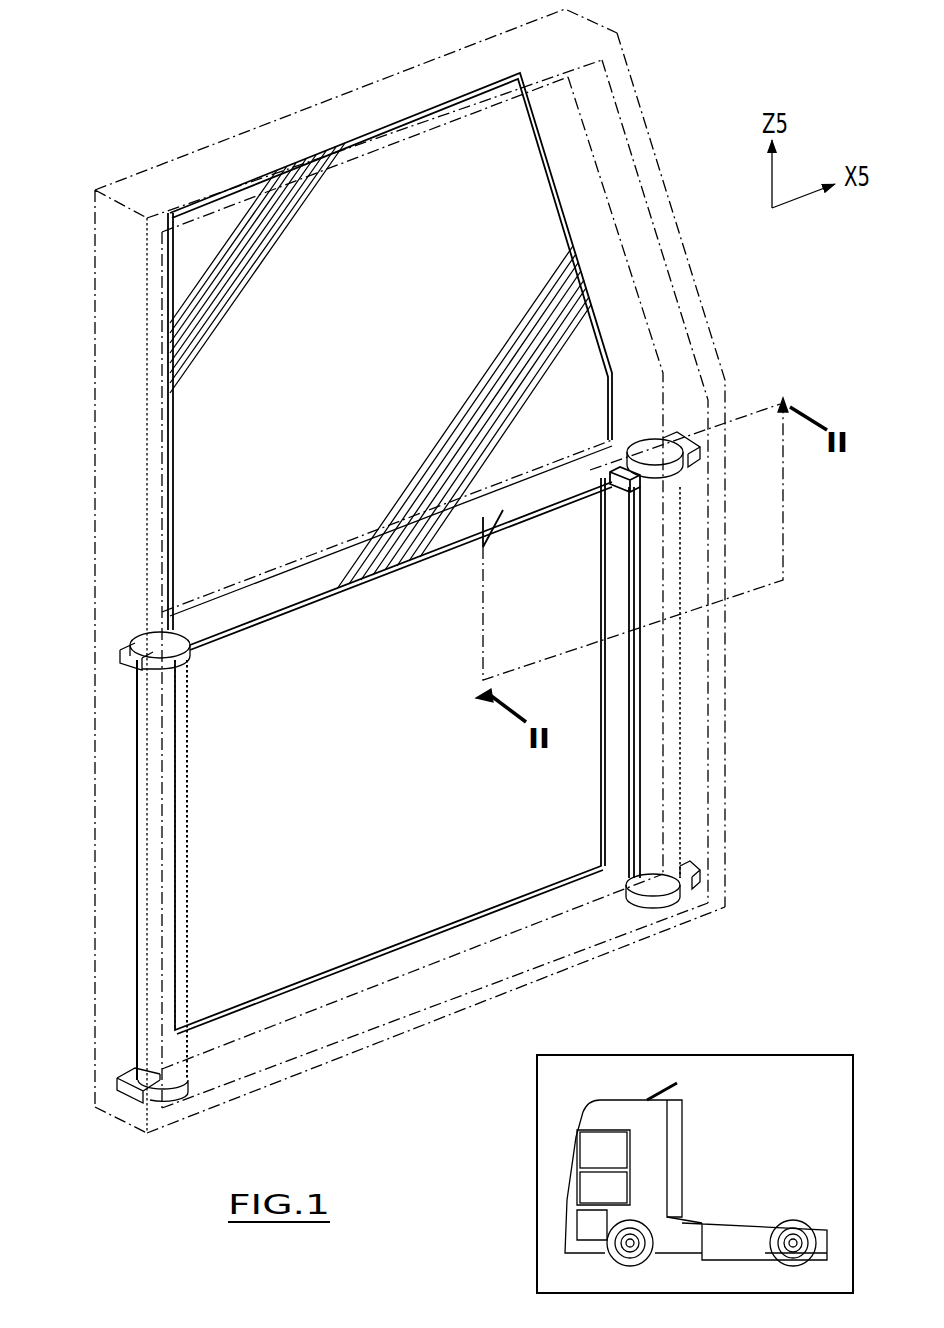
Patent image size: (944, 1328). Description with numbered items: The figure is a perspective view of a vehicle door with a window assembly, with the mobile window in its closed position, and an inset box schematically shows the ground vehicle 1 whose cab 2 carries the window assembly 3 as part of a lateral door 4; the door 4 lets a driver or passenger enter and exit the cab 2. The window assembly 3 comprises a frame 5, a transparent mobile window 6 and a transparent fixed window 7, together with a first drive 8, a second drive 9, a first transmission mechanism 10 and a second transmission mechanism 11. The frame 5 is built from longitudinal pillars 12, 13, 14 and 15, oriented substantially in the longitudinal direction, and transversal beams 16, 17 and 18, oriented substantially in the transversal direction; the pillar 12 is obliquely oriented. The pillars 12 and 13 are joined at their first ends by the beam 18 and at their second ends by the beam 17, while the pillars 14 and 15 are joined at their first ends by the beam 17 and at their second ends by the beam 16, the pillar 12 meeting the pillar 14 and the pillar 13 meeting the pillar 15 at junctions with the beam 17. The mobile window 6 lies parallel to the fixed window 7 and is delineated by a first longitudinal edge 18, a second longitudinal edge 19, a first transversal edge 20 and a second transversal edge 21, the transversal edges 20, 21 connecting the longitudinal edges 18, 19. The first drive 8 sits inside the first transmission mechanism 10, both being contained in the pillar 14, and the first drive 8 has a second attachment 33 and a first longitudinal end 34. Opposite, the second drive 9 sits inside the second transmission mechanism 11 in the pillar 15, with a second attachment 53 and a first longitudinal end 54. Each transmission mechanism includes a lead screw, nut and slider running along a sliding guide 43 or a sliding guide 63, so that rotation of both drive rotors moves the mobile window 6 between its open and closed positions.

The ground vehicle 1 is at (693, 1133).
The cab 2 is at (653, 1177).
The window assembly 3 is at (404, 96).
The lateral door 4 is at (284, 84).
The frame 5 is at (622, 103).
The mobile window 6 is at (603, 1140).
The fixed window 7 is at (590, 1198).
The first drive 8 is at (676, 647).
The second drive 9 is at (157, 803).
The first transmission mechanism 10 is at (647, 733).
The second transmission mechanism 11 is at (157, 877).
The longitudinal pillar 12 is at (663, 320).
The longitudinal pillar 13 is at (122, 428).
The longitudinal pillar 14 is at (698, 797).
The longitudinal pillar 15 is at (148, 990).
The transversal beam 16 is at (377, 1010).
The transversal beam 17 is at (257, 594).
The transversal beam 18 is at (181, 178).
The second longitudinal edge 19 is at (172, 327).
The first transversal edge 20 is at (328, 594).
The second transversal edge 21 is at (286, 165).
The second attachment 33 is at (700, 456).
The first longitudinal end 34 is at (667, 897).
The sliding guide 43 is at (670, 677).
The second attachment 53 is at (130, 640).
The first longitudinal end 54 is at (130, 1070).
The sliding guide 63 is at (140, 932).